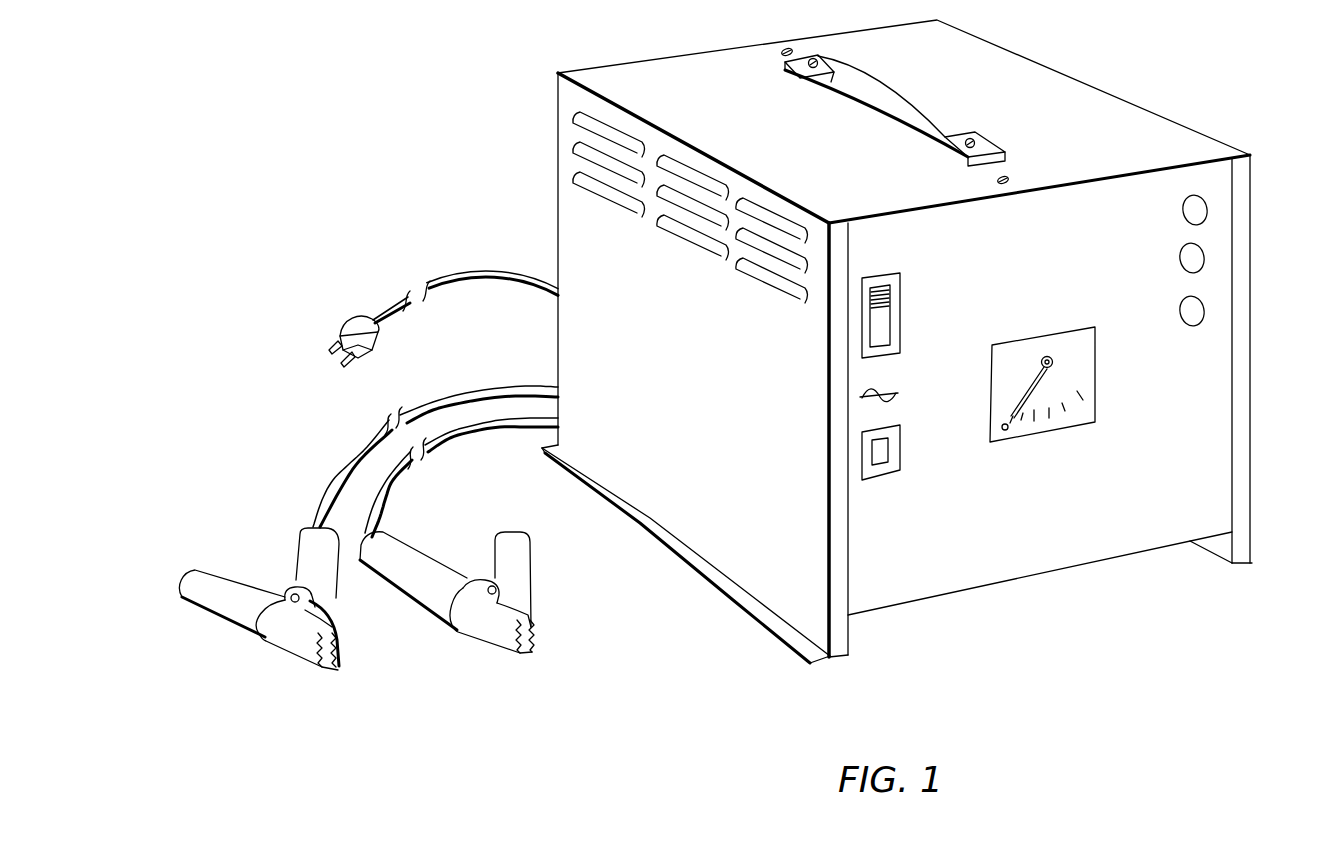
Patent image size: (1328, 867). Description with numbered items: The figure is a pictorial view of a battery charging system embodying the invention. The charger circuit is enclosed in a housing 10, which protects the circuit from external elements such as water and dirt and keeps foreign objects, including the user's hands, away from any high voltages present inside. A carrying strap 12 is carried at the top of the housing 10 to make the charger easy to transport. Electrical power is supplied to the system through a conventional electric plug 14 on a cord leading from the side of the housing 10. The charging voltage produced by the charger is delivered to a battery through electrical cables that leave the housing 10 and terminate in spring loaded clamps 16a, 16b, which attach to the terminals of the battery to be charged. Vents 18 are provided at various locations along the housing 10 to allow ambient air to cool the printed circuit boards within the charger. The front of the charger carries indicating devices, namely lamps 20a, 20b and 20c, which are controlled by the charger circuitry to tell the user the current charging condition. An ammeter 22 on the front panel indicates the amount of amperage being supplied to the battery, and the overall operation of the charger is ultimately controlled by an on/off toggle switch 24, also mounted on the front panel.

The housing 10 is at (1127, 100).
The carrying strap 12 is at (920, 105).
The electric plug 14 is at (465, 272).
The spring loaded clamp 16a is at (308, 652).
The spring loaded clamp 16b is at (518, 652).
The vents 18 is at (711, 250).
The lamp 20a is at (1204, 220).
The lamp 20b is at (1198, 268).
The lamp 20c is at (1204, 314).
The ammeter 22 is at (1088, 424).
The on/off toggle switch 24 is at (902, 313).